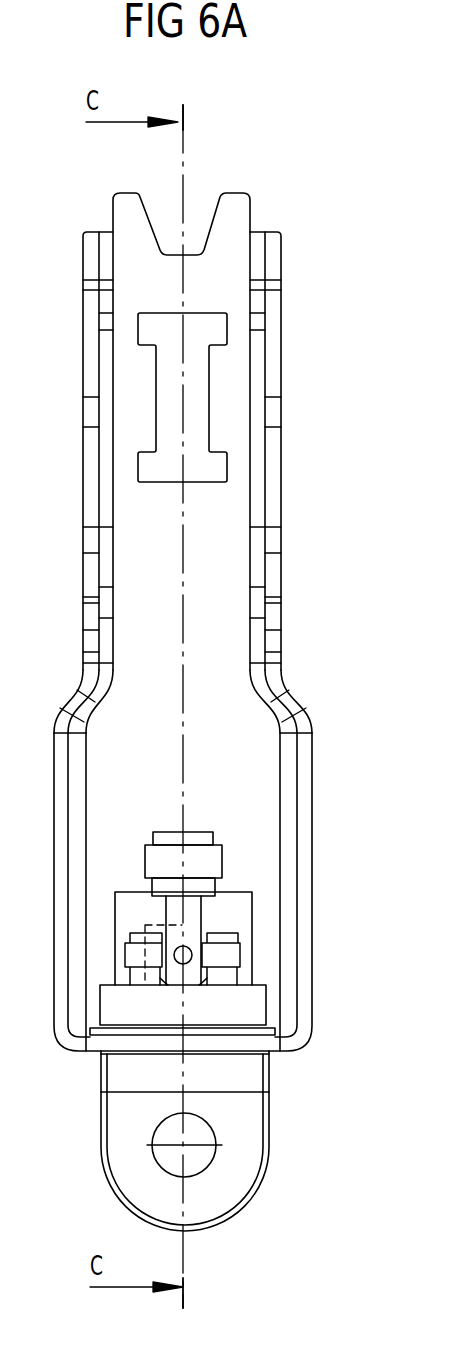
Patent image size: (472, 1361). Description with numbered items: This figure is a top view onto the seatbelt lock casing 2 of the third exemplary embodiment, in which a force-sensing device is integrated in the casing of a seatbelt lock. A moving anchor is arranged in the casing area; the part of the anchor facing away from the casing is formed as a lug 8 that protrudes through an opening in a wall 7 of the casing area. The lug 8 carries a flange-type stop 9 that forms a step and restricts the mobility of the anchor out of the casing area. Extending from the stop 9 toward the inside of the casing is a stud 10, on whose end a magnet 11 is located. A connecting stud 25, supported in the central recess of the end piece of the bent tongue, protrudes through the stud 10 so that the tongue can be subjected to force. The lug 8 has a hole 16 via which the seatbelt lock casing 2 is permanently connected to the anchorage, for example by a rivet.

The seatbelt lock casing 2 is at (270, 337).
The wall 7 is at (270, 1042).
The lug 8 is at (220, 1197).
The flange-type stop 9 is at (242, 1002).
The stud 10 is at (193, 910).
The magnet 11 is at (200, 858).
The hole 16 is at (196, 1158).
The connecting stud 25 is at (192, 955).